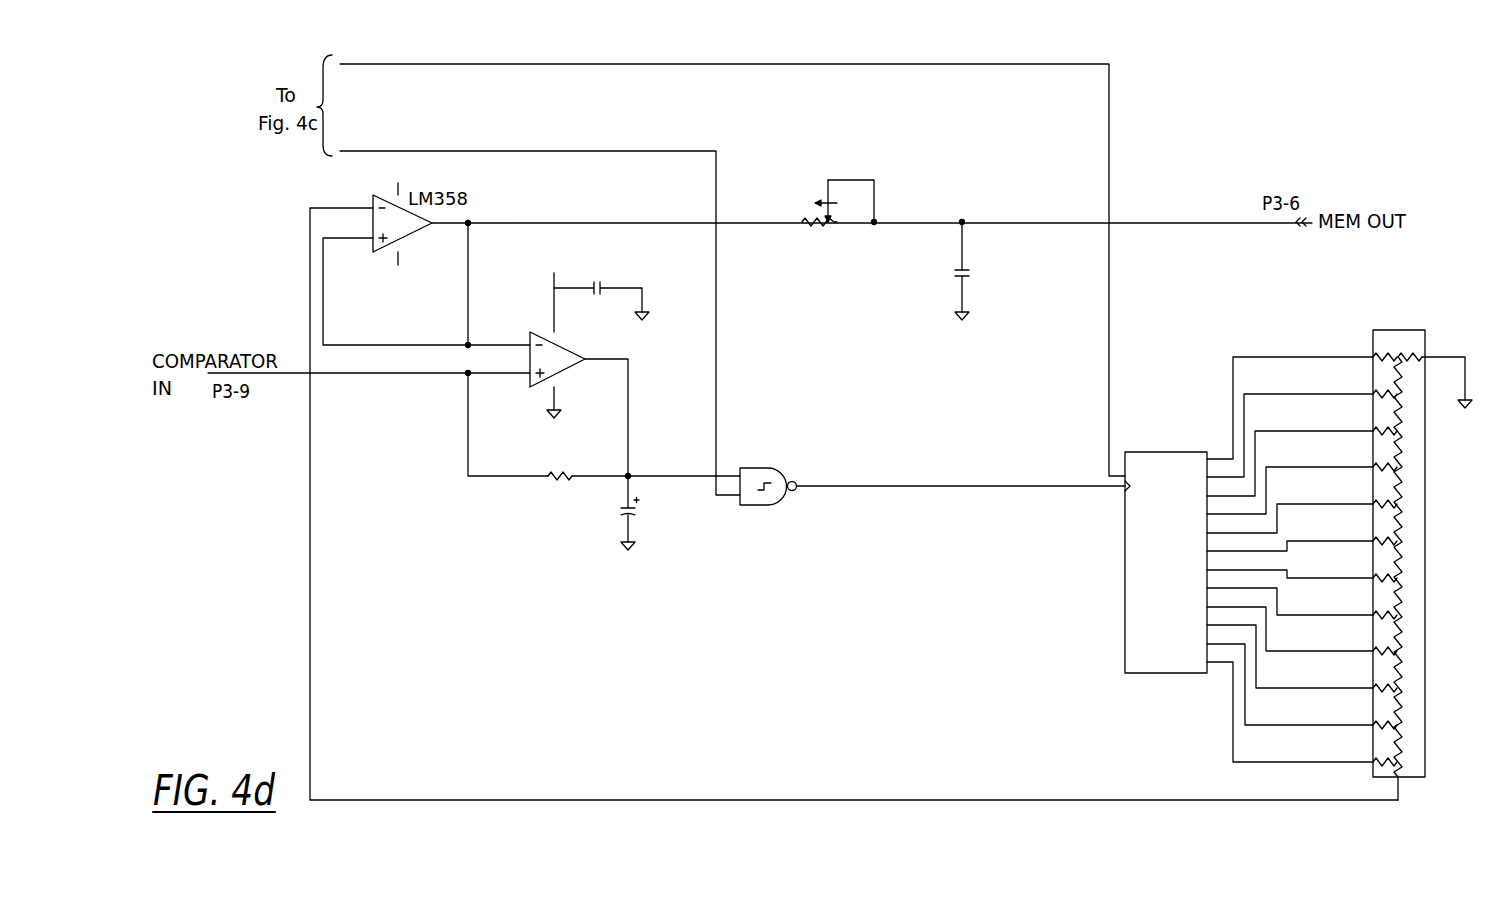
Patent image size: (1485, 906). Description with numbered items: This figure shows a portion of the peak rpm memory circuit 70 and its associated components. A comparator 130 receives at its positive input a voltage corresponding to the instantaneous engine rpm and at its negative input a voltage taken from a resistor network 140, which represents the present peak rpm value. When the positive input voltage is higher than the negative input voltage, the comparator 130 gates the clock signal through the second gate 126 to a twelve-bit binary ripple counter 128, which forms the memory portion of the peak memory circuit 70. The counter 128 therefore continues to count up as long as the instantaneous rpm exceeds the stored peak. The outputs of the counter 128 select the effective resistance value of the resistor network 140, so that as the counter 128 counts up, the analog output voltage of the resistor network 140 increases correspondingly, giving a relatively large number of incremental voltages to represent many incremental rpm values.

The comparator 130 is at (518, 395).
The second gate 126 is at (758, 468).
The peak memory circuit 70 is at (1057, 447).
The twelve-bit binary ripple counter 128 is at (1151, 452).
The resistor network 140 is at (1396, 330).